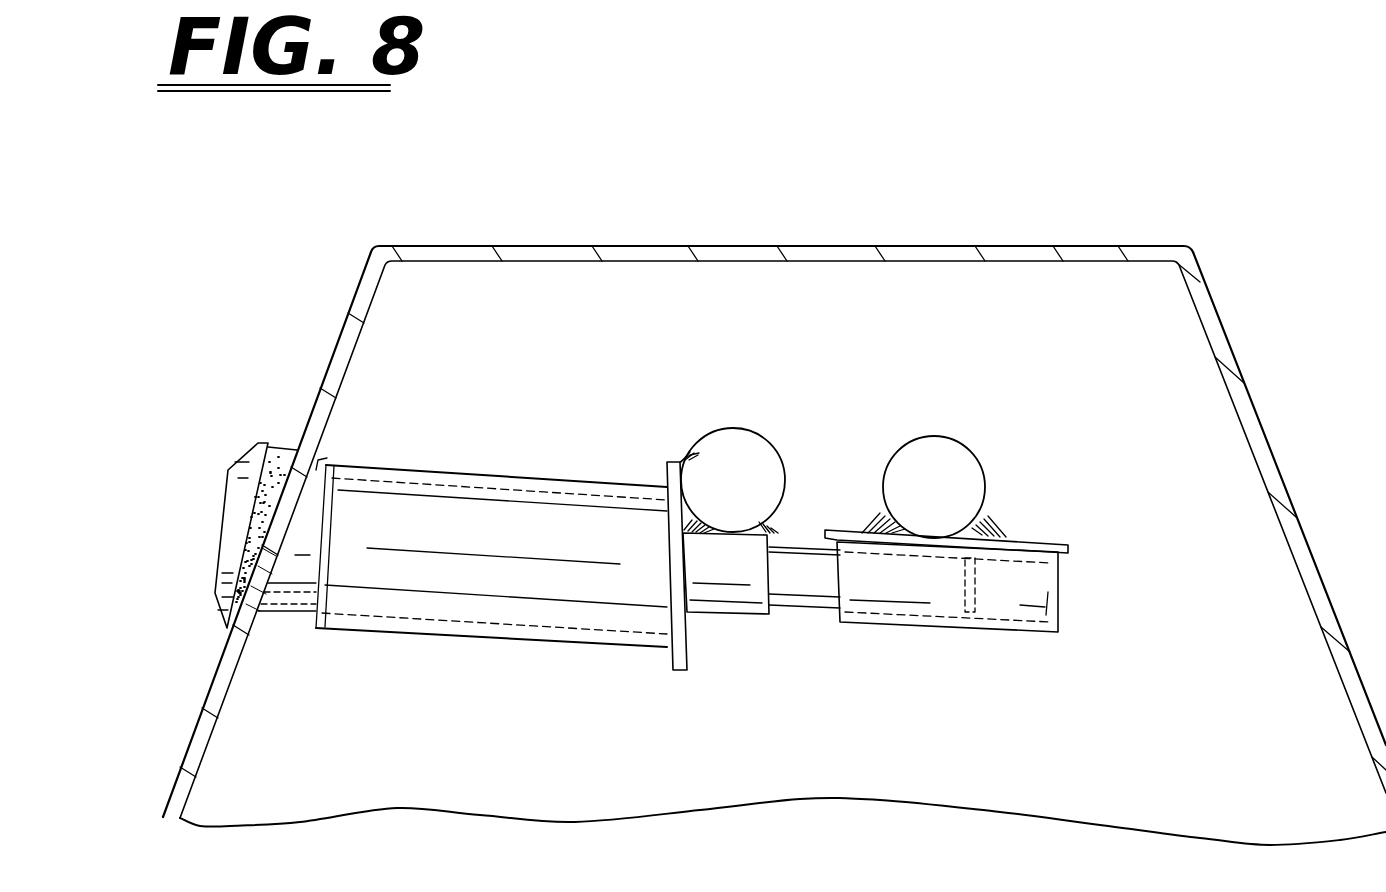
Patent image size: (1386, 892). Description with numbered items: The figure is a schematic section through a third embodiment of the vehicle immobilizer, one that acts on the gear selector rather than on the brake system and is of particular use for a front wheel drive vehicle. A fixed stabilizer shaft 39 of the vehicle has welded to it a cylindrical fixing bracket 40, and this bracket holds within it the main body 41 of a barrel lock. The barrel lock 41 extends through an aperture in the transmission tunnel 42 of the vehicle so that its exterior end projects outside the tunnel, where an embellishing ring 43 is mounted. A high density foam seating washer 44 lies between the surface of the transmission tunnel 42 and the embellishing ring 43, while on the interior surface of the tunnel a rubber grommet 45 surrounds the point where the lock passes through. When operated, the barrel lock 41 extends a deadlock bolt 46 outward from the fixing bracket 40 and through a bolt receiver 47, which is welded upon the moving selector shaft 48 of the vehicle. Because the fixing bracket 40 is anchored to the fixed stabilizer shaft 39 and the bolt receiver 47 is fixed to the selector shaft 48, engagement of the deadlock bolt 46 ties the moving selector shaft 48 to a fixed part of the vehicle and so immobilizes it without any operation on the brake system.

The fixed stabilizer shaft 39 is at (733, 447).
The cylindrical fixing bracket 40 is at (536, 613).
The main body of barrel lock 41 is at (292, 600).
The transmission tunnel 42 is at (332, 372).
The embellishing ring 43 is at (227, 505).
The high density foam seating washer 44 is at (283, 457).
The rubber grommet 45 is at (327, 455).
The deadlock bolt 46 is at (803, 583).
The bolt receiver 47 is at (995, 626).
The moving selector shaft 48 is at (975, 478).